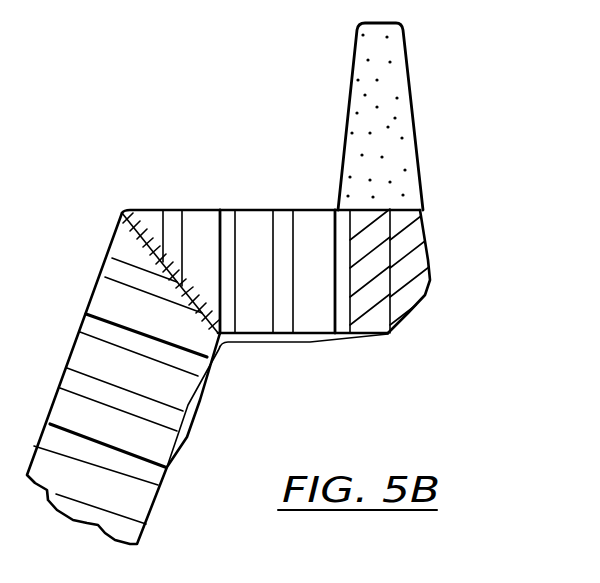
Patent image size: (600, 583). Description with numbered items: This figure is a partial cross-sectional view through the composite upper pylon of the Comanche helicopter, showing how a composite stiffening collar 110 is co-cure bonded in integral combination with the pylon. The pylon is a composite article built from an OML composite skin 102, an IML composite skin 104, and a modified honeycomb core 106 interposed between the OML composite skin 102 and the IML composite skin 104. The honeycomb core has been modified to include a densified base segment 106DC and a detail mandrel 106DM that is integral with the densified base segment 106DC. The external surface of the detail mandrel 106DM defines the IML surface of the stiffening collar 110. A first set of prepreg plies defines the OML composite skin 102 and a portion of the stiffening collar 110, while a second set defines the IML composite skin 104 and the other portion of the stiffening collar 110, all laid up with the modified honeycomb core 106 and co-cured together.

The OML composite skin 102 is at (173, 211).
The IML composite skin 104 is at (246, 345).
The modified honeycomb core 106 is at (252, 220).
The densified base segment 106DC is at (378, 255).
The detail mandrel 106DM is at (390, 167).
The stiffening collar 110 is at (417, 73).